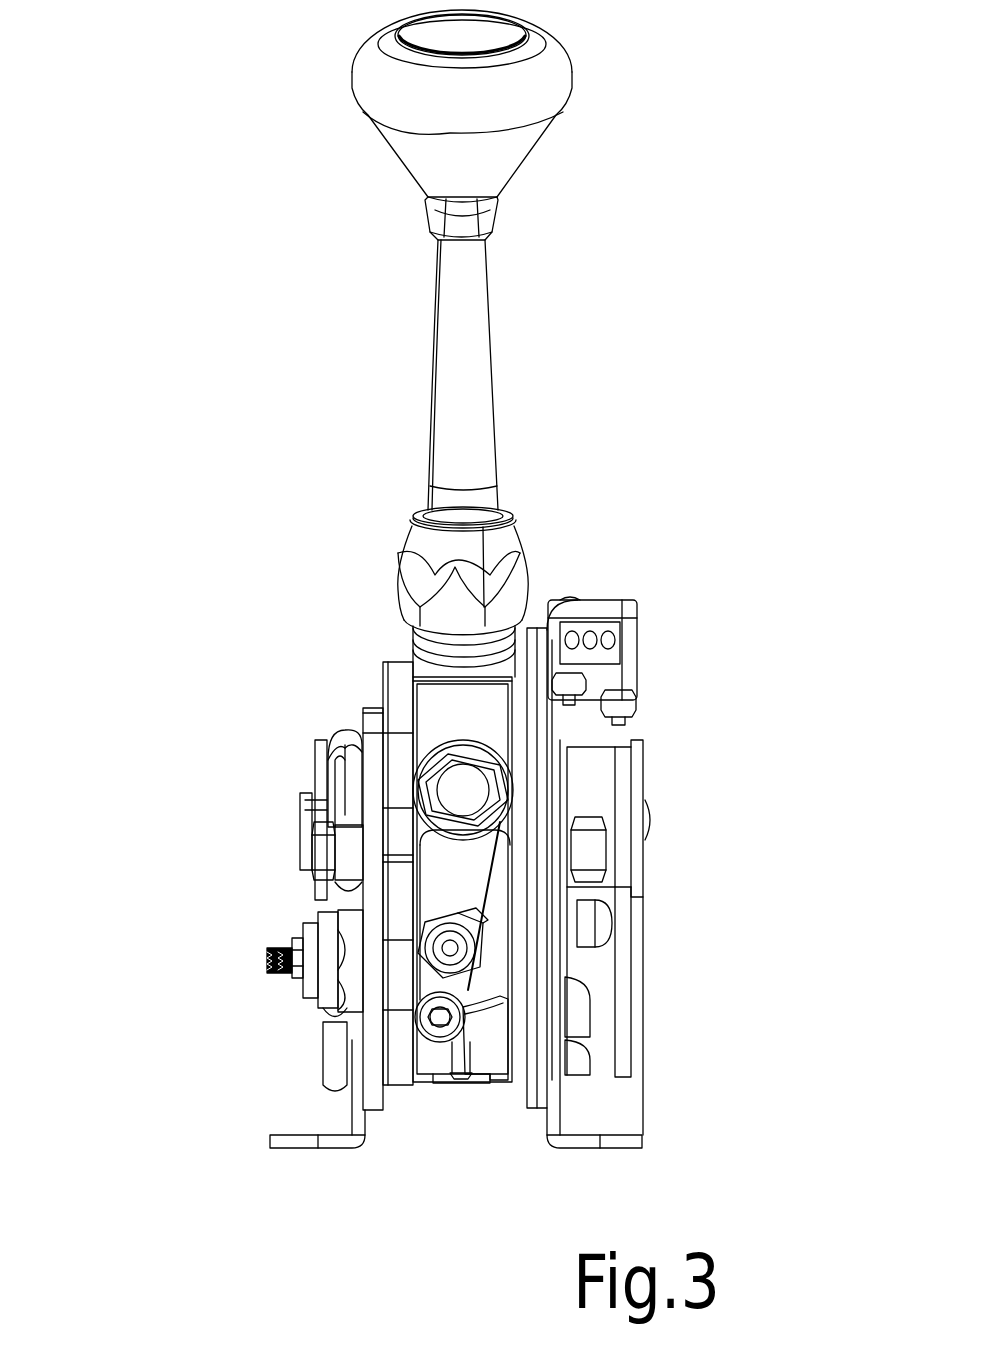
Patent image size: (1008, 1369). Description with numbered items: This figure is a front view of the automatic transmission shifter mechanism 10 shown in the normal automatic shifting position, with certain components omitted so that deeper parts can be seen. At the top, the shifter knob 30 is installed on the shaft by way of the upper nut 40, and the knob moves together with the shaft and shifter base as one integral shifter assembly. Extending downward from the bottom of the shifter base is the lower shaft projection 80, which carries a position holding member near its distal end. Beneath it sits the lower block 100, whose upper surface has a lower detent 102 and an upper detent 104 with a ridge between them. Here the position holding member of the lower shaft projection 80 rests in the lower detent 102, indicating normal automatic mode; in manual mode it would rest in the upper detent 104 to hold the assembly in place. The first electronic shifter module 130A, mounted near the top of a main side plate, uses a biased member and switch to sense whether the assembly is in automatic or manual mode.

The automatic transmission shifter mechanism 10 is at (158, 131).
The shifter knob 30 is at (572, 70).
The upper nut 40 is at (463, 795).
The lower shaft projection 80 is at (457, 983).
The lower block 100 is at (493, 1050).
The lower detent 102 is at (455, 1080).
The upper detent 104 is at (465, 1008).
The first electronic shifter module 130A is at (630, 660).